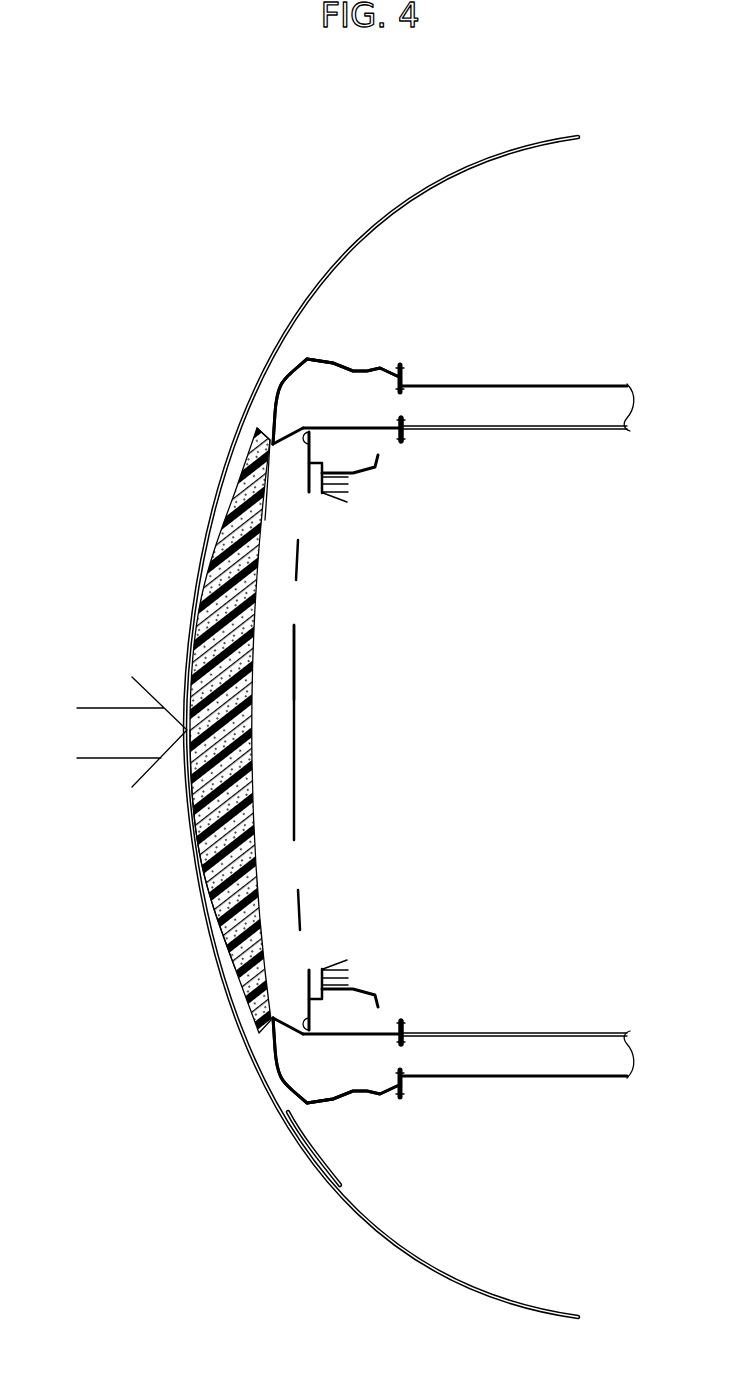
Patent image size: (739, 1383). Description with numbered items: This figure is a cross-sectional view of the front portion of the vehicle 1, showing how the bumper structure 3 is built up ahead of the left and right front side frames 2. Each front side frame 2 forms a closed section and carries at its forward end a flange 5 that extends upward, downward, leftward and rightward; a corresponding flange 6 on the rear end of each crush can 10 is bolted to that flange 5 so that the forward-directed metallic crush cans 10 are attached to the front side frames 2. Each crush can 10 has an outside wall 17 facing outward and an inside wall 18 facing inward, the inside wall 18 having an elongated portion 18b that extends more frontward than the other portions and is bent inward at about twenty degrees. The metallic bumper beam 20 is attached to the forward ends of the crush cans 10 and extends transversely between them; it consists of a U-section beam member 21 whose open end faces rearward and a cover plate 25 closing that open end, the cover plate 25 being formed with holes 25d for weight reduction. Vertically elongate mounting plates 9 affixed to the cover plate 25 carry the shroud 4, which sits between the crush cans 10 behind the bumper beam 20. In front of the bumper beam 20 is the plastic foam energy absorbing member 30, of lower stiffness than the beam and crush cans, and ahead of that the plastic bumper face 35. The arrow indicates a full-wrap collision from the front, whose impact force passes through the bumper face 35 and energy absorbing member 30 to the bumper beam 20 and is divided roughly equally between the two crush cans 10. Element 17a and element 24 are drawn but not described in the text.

The vehicle 1 is at (397, 111).
The front side frame 2 is at (548, 384).
The bumper structure 3 is at (184, 456).
The shroud 4 is at (384, 988).
The flange 5 is at (402, 440).
The flange 6 is at (402, 441).
The mounting plate 9 is at (304, 428).
The crush can 10 is at (368, 368).
The outside wall 17 is at (358, 352).
The spring end portion 17a is at (333, 361).
The inside wall 18 is at (360, 430).
The elongated portion 18b is at (290, 430).
The bumper beam 20 is at (296, 729).
The beam member 21 is at (237, 648).
The lens upper end 24 is at (263, 510).
The cover plate 25 is at (294, 640).
The hole 25d is at (298, 862).
The energy absorbing member 30 is at (212, 900).
The bumper face 35 is at (290, 1115).